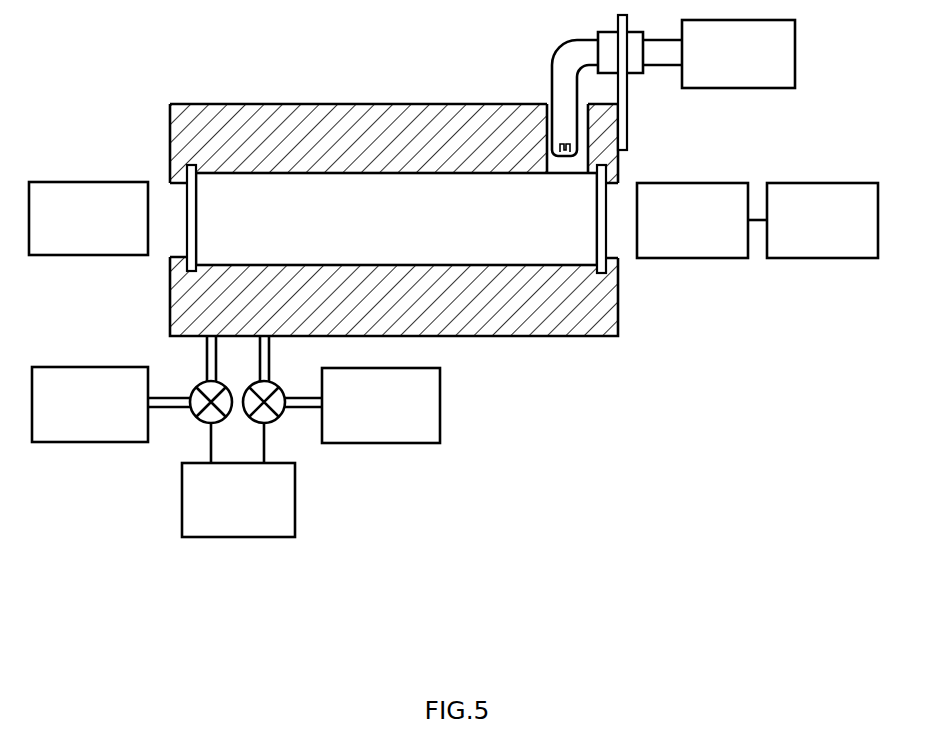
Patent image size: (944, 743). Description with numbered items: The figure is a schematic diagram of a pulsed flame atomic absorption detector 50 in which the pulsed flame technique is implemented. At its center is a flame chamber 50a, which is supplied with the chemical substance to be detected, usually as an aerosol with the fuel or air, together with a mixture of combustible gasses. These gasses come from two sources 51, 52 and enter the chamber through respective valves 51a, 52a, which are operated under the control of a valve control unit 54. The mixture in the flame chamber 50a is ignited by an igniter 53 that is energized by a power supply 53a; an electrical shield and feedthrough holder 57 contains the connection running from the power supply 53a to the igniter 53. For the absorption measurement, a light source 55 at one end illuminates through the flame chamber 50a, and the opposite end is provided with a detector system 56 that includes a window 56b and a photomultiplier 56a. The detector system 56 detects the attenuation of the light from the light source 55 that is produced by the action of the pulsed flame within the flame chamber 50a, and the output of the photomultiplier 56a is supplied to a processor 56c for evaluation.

The flame atomic absorption detector 50 is at (455, 103).
The flame chamber 50a is at (380, 233).
The combustible gas source 51 is at (63, 420).
The valve 51a is at (195, 422).
The combustible gas source 52 is at (400, 420).
The valve 52a is at (278, 427).
The igniter 53 is at (565, 160).
The power supply 53a is at (770, 68).
The valve control unit 54 is at (220, 515).
The light source 55 is at (65, 238).
The detector system 56 is at (757, 199).
The photomultiplier 56a is at (720, 236).
The window 56b is at (610, 267).
The processor 56c is at (850, 236).
The electrical shield and feedthrough holder 57 is at (630, 100).